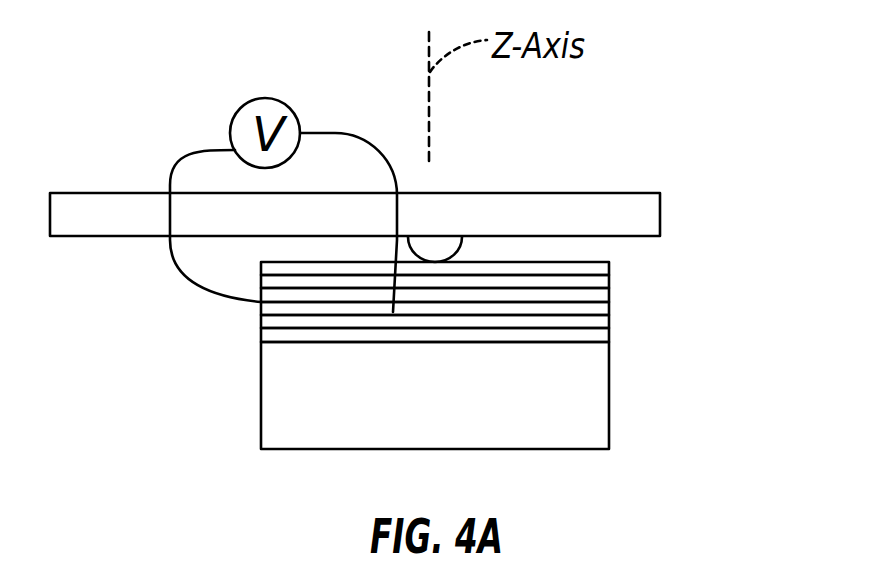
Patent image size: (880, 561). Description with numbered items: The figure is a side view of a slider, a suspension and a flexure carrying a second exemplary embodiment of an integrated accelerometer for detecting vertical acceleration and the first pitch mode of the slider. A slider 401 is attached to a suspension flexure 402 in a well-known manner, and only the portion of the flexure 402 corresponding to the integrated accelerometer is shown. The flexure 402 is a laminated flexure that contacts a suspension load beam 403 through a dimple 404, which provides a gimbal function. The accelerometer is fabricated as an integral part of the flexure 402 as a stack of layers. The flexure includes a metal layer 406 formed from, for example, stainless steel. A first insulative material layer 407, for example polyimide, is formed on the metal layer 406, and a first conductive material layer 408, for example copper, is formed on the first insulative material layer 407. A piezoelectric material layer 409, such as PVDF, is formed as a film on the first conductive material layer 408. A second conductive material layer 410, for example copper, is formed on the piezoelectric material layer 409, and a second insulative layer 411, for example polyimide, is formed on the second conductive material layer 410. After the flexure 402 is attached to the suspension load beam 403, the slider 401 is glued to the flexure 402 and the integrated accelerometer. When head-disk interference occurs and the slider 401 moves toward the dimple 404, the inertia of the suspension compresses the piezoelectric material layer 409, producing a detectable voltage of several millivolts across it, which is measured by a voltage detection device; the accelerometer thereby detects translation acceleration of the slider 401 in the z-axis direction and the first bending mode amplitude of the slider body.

The slider 401 is at (282, 452).
The suspension flexure 402 is at (261, 270).
The suspension load beam 403 is at (143, 193).
The dimple 404 is at (431, 248).
The metal layer 406 is at (598, 262).
The first insulative material layer 407 is at (609, 280).
The first conductive material layer 408 is at (609, 297).
The piezoelectric material layer 409 is at (609, 310).
The second conductive material layer 410 is at (595, 330).
The second insulative layer 411 is at (588, 343).